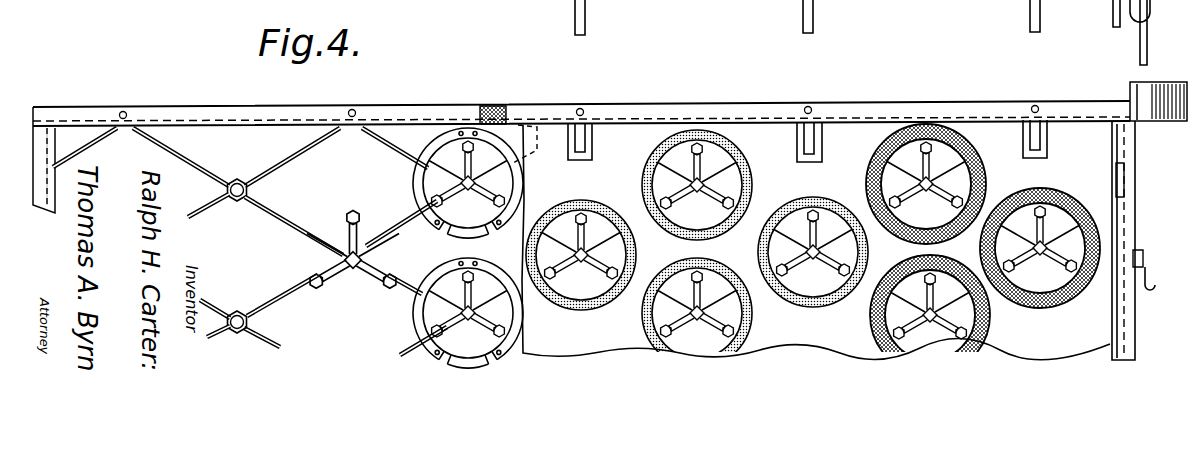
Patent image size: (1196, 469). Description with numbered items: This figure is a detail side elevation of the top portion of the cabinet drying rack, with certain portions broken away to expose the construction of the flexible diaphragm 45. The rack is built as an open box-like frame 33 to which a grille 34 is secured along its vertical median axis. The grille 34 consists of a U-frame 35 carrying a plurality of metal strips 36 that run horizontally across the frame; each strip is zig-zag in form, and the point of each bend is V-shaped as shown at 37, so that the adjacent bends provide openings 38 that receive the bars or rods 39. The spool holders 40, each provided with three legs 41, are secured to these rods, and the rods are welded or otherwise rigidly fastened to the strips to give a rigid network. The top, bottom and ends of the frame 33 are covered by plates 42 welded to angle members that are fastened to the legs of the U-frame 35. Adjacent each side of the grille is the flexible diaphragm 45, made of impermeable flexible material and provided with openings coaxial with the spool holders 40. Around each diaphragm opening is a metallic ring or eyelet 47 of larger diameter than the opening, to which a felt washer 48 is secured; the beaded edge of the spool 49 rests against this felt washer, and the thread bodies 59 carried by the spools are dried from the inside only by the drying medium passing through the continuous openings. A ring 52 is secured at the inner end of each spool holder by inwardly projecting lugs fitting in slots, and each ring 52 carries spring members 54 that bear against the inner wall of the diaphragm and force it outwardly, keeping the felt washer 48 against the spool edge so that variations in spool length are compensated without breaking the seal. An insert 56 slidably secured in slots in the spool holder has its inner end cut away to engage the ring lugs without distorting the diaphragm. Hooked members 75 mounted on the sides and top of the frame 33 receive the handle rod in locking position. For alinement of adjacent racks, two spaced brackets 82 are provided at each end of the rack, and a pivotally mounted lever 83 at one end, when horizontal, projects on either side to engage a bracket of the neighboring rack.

The box-like frame 33 is at (698, 107).
The grille 34 is at (380, 162).
The U-frame 35 is at (205, 106).
The metal strips 36 is at (308, 148).
The V-shaped bend 37 is at (240, 179).
The openings 38 is at (250, 189).
The bars or rods 39 is at (231, 203).
The spool holders 40 is at (430, 196).
The legs 41 is at (335, 258).
The plates 42 is at (495, 106).
The flexible diaphragm 45 is at (816, 242).
The metallic ring or eyelet 47 is at (755, 317).
The felt washer 48 is at (607, 309).
The spool 49 is at (1004, 194).
The ring 52 is at (462, 237).
The spring members 54 is at (503, 266).
The insert 56 is at (375, 270).
The thread bodies 59 is at (1070, 193).
The hooked members 75 is at (580, 142).
The brackets 82 is at (1148, 287).
The pivotally mounted lever 83 is at (1143, 261).